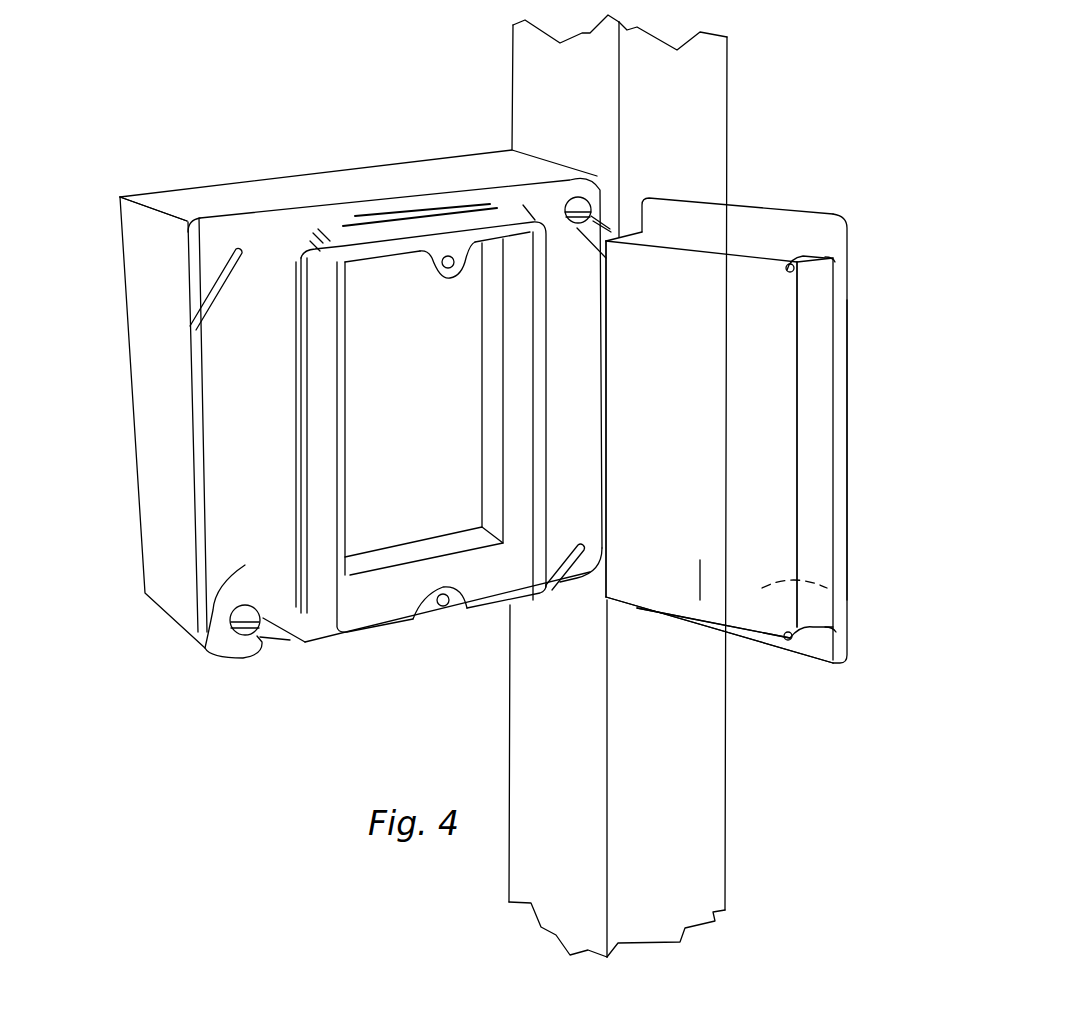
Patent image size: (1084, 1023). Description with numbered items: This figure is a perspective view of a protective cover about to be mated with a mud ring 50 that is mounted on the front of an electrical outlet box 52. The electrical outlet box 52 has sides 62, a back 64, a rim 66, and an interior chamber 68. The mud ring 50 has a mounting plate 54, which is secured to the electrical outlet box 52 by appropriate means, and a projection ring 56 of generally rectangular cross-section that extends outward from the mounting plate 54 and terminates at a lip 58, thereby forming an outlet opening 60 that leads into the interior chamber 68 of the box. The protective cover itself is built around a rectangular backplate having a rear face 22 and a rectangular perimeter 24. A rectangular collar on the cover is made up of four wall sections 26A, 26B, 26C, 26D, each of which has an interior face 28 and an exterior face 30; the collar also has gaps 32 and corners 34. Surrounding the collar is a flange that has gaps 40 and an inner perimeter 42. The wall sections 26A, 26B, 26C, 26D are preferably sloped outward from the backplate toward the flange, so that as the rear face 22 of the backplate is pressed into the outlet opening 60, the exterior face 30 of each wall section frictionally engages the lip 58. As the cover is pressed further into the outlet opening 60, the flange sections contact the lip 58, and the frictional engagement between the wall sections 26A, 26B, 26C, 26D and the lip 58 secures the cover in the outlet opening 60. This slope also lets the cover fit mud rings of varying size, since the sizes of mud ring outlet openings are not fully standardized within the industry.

The rear face 22 is at (710, 558).
The rectangular perimeter 24 is at (797, 420).
The wall section 26A is at (640, 608).
The wall section 26B is at (813, 365).
The wall section 26C is at (697, 248).
The wall section 26D is at (603, 313).
The interior face 28 is at (845, 598).
The exterior face 30 is at (836, 215).
The gaps 32 is at (800, 298).
The corners 34 is at (610, 238).
The gaps 40 is at (837, 257).
The inner perimeter 42 is at (840, 486).
The mud ring 50 is at (215, 648).
The electrical outlet box 52 is at (248, 168).
The mounting plate 54 is at (253, 377).
The projection ring 56 is at (423, 224).
The lip 58 is at (367, 640).
The outlet opening 60 is at (388, 573).
The sides 62 is at (153, 253).
The back 64 is at (365, 271).
The rim 66 is at (200, 217).
The interior chamber 68 is at (426, 483).